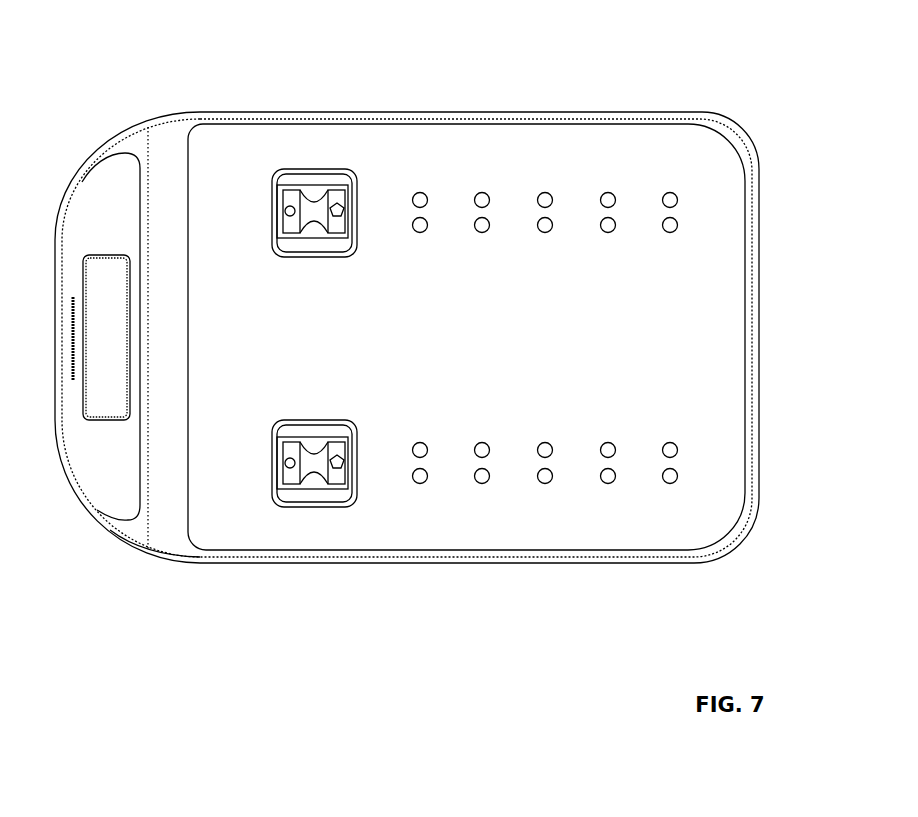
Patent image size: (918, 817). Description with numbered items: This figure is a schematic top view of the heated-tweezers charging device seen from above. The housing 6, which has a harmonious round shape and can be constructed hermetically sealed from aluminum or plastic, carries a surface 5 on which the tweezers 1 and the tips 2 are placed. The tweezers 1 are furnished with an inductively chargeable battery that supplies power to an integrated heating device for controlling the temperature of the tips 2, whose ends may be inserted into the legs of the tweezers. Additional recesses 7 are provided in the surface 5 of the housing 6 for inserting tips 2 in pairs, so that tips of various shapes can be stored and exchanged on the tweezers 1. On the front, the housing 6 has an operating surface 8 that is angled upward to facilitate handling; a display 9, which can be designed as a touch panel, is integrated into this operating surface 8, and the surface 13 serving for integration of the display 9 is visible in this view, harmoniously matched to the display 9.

The tweezers 1 is at (315, 200).
The tips 2 is at (481, 192).
The surface 5 is at (451, 352).
The housing 6 is at (758, 318).
The recesses 7 is at (418, 190).
The operating surface 8 is at (112, 213).
The display 9 is at (101, 345).
The surface 13 is at (133, 528).